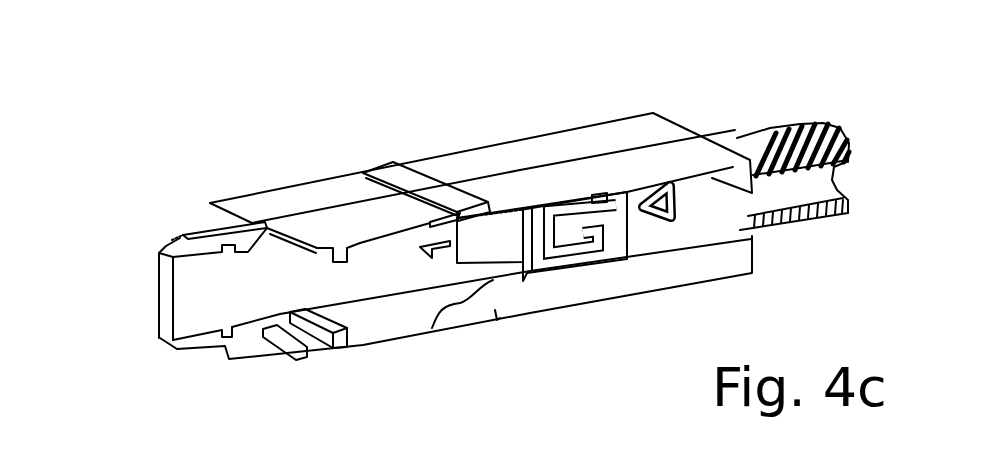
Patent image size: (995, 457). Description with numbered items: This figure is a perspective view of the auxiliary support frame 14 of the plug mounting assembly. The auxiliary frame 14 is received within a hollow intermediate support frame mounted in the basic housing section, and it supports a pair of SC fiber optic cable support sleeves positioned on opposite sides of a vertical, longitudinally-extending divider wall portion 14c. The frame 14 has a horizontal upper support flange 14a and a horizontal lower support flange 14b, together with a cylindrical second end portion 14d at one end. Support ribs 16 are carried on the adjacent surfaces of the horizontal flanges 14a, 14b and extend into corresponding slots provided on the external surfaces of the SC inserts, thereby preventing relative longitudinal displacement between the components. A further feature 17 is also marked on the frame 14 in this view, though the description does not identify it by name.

The auxiliary support frame 14 is at (549, 186).
The upper support flange 14a is at (318, 198).
The lower support flange 14b is at (382, 322).
The divider wall portion 14c is at (197, 292).
The cylindrical second end portion 14d is at (794, 127).
The support ribs 16 is at (317, 331).
The guide strip / slot 17 is at (382, 247).